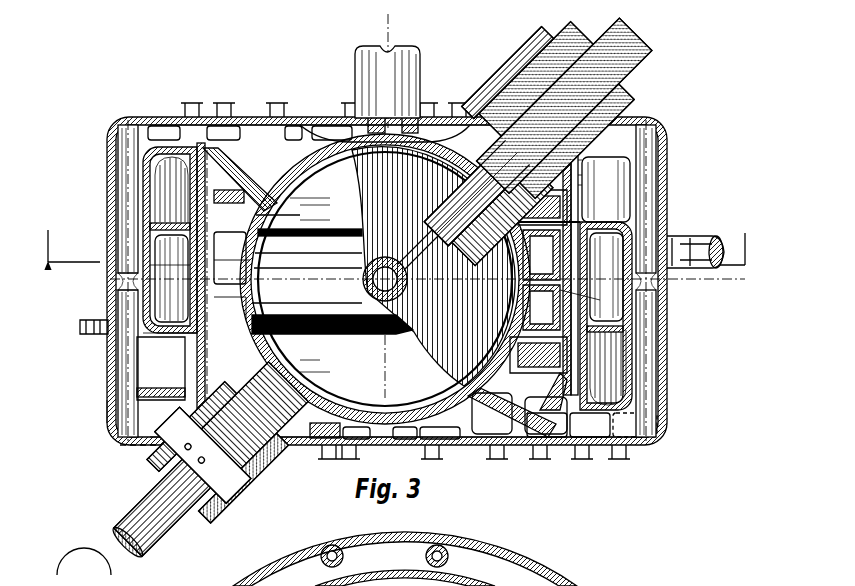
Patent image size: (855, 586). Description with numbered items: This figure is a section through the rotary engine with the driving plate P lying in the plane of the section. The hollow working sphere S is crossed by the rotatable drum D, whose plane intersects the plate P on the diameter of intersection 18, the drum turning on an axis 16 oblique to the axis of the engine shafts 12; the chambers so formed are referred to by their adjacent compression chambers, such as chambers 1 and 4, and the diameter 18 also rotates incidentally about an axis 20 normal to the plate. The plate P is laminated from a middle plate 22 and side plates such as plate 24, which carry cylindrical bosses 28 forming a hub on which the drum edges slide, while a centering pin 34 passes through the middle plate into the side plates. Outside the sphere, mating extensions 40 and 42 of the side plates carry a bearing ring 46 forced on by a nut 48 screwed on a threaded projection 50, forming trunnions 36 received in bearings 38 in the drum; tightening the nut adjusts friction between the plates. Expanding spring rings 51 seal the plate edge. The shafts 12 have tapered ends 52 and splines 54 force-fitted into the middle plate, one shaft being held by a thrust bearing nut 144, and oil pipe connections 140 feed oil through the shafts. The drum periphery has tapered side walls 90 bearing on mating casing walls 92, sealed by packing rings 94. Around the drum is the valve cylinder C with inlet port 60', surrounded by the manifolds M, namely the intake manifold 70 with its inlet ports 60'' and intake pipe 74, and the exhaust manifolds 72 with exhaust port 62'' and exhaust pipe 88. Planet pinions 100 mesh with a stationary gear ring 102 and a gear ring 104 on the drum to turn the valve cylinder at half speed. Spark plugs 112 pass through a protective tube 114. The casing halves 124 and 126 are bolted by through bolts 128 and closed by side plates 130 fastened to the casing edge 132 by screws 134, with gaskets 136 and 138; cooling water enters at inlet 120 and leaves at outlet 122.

The compression chamber 1 is at (327, 367).
The compression chamber 4 is at (394, 220).
The engine shaft 12 is at (636, 46).
The axis 16 is at (389, 29).
The diameter of intersection 18 is at (285, 272).
The axis 20 is at (377, 289).
The middle plate 22 is at (447, 335).
The side plate 24 is at (322, 214).
The cylindrical boss 28 is at (341, 237).
The centering pin 34 is at (371, 277).
The trunnion 36 is at (588, 246).
The bearing 38 is at (575, 215).
The extension 40 is at (530, 290).
The extension 42 is at (528, 314).
The bearing ring 46 is at (262, 289).
The nut 48 is at (205, 300).
The threaded projection 50 is at (568, 292).
The expanding spring ring 51 is at (258, 284).
The tapered end 52 is at (476, 192).
The spline 54 is at (476, 192).
The inlet port 60' is at (100, 282).
The inlet port 60'' is at (390, 290).
The exhaust port 62'' is at (390, 272).
The intake manifold 70 is at (176, 246).
The exhaust manifold 72 is at (172, 181).
The intake pipe 74 is at (712, 245).
The exhaust pipe 88 is at (295, 215).
The tapered side wall 90 is at (246, 190).
The mating wall 92 is at (268, 198).
The packing ring 94 is at (490, 478).
The planet pinion 100 is at (575, 183).
The stationary ring of gear teeth 102 is at (580, 170).
The rotatable ring of gear teeth 104 is at (596, 197).
The spark plug 112 is at (92, 338).
The protective tube 114 is at (150, 337).
The cooling water inlet 120 is at (404, 72).
The cooling water outlet 122 is at (408, 553).
The casing half 124 is at (105, 419).
The casing half 126 is at (106, 147).
The through bolt 128 is at (120, 446).
The side plate 130 is at (328, 114).
The casing edge 132 is at (170, 117).
The screw 134 is at (194, 102).
The gasket 136 is at (112, 296).
The gasket 138 is at (182, 116).
The oil pipe connection 140 is at (526, 68).
The thrust bearing nut 144 is at (566, 45).
The valve cylinder C is at (194, 209).
The manifolds M is at (177, 238).
The drum D is at (232, 240).
The working sphere S is at (470, 388).
The driving plate P is at (445, 398).